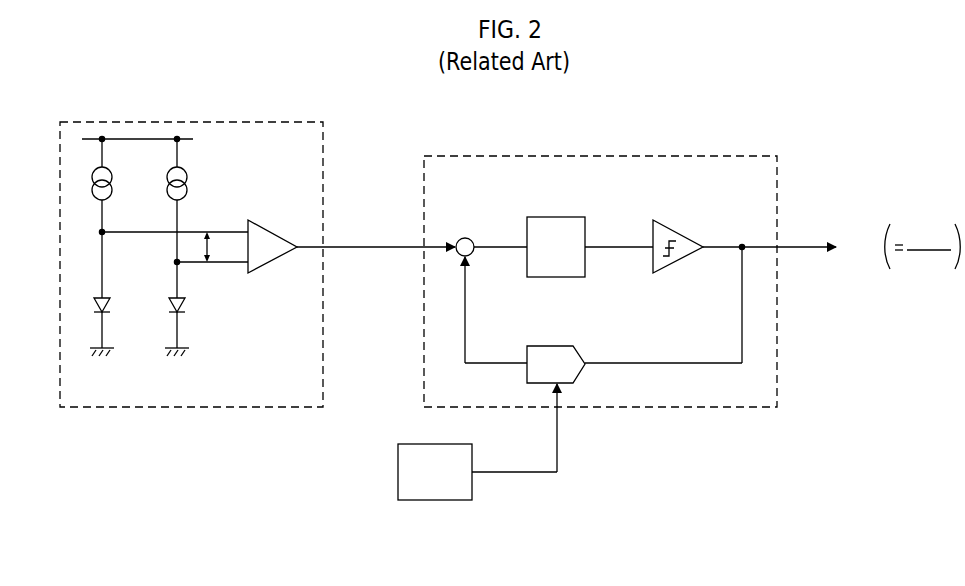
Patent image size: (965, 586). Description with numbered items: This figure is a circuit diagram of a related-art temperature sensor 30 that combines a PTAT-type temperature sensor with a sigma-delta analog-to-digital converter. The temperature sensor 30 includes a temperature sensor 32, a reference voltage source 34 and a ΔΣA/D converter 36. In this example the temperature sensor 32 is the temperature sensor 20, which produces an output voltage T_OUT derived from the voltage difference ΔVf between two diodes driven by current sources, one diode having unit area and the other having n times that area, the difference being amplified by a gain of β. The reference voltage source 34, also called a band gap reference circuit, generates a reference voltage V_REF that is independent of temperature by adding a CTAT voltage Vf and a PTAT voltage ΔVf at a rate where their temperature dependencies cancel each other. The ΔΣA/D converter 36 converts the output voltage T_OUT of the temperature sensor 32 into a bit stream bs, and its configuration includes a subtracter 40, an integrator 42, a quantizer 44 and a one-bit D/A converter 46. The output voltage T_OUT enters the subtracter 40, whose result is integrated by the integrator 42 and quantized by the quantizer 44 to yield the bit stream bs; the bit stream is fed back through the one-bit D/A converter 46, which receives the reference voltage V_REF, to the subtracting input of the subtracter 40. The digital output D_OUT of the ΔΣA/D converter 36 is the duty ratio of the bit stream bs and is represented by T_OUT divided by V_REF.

The temperature sensor 30 is at (529, 574).
The temperature sensor 32 is at (232, 122).
The temperature sensor 20 is at (243, 186).
The ΔΣA/D converter 36 is at (620, 156).
The subtracter 40 is at (467, 238).
The integrator 42 is at (560, 217).
The quantizer 44 is at (678, 228).
The one-bit D/A converter 46 is at (553, 345).
The reference voltage source 34 is at (398, 472).